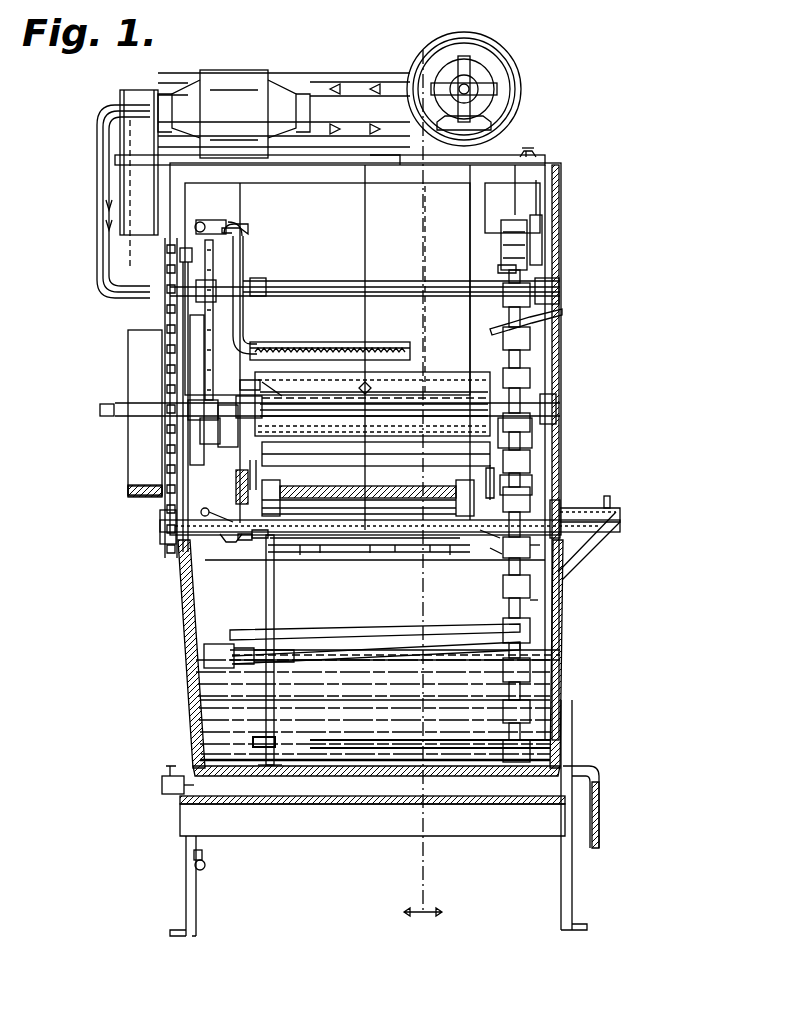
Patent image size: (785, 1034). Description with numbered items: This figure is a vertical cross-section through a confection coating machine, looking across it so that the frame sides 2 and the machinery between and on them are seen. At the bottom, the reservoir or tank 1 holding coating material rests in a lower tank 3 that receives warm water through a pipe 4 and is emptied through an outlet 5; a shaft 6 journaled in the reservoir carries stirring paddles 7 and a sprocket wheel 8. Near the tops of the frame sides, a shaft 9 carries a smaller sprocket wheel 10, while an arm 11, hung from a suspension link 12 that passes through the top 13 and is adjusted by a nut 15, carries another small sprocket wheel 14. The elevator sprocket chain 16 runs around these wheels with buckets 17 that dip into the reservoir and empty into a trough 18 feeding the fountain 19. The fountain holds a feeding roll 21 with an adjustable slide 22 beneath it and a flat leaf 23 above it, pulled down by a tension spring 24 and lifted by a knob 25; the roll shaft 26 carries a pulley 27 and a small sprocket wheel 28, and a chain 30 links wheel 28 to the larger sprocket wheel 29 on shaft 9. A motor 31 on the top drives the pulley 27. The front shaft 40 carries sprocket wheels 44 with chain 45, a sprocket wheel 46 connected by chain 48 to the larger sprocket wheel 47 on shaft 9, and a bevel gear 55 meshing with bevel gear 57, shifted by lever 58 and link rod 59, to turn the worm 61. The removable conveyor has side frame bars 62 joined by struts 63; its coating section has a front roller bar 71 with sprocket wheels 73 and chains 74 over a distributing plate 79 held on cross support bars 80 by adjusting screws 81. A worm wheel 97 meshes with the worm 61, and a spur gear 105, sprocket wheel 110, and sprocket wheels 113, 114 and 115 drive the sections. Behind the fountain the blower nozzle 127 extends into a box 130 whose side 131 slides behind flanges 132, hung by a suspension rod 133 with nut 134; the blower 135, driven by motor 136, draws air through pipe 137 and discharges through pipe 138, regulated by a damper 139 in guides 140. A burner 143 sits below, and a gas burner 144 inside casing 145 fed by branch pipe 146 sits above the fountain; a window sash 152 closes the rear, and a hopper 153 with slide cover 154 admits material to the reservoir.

The reservoir or tank 1 is at (186, 620).
The frame sides 2 is at (165, 576).
The lower tank 3 is at (196, 718).
The pipe 4 is at (598, 802).
The outlet 5 is at (173, 788).
The shaft 6 is at (232, 648).
The stirring blades or paddles 7 is at (378, 644).
The sprocket wheel 8 is at (540, 598).
The shaft 9 is at (434, 287).
The smaller sprocket wheel 10 is at (502, 270).
The arm 11 is at (543, 250).
The suspension link 12 is at (521, 190).
The top 13 is at (540, 160).
The small sprocket wheel 14 is at (536, 236).
The nut 15 is at (534, 149).
The elevator sprocket chain 16 is at (540, 548).
The buckets 17 is at (502, 240).
The trough 18 is at (526, 342).
The fountain 19 is at (248, 424).
The feeding roll 21 is at (440, 388).
The adjustable slide 22 is at (298, 434).
The flat leaf 23 is at (420, 388).
The tension spring 24 is at (254, 386).
The knob 25 is at (375, 401).
The shaft 26 is at (102, 411).
The pulley 27 is at (130, 494).
The small sprocket wheel 28 is at (218, 440).
The larger sprocket wheel 29 is at (197, 320).
The sprocket chain 30 is at (212, 332).
The motor 31 is at (244, 80).
The shaft 40 is at (264, 554).
The sprocket wheels 44 is at (488, 536).
The chain 45 is at (498, 554).
The sprocket wheel 46 is at (160, 544).
The larger sprocket wheel 47 is at (164, 254).
The chain 48 is at (180, 374).
The bevel gear 55 is at (230, 540).
The bevel gear 57 is at (244, 540).
The lever 58 is at (162, 520).
The link rod 59 is at (213, 503).
The worm 61 is at (236, 494).
The side frame bars 62 is at (270, 496).
The transverse struts 63 is at (369, 546).
The front roller bar 71 is at (403, 546).
The sprocket wheels 73 is at (439, 546).
The chains 74 is at (334, 538).
The distributing plate 79 is at (350, 546).
The cross support bars 80 is at (382, 552).
The adjusting screws 81 is at (300, 554).
The worm wheel 97 is at (250, 474).
The spur gear 105 is at (530, 488).
The sprocket wheel 110 is at (406, 498).
The sprocket wheel 113 is at (260, 538).
The sprocket wheel 114 is at (490, 468).
The sprocket wheel 115 is at (304, 496).
The blower nozzle 127 is at (510, 422).
The box 130 is at (236, 336).
The side 131 is at (244, 264).
The flanges 132 is at (248, 285).
The suspension rod 133 is at (352, 270).
The nut 134 is at (338, 160).
The blower 135 is at (508, 71).
The motor 136 is at (504, 98).
The pipe 137 is at (350, 74).
The pipe 138 is at (288, 158).
The damper 139 is at (160, 322).
The guides 140 is at (130, 302).
The burner 143 is at (204, 866).
The gas burner 144 is at (318, 346).
The casing 145 is at (368, 344).
The branch pipe 146 is at (246, 240).
The window sash 152 is at (430, 186).
The hopper 153 is at (586, 556).
The slide cover 154 is at (606, 512).